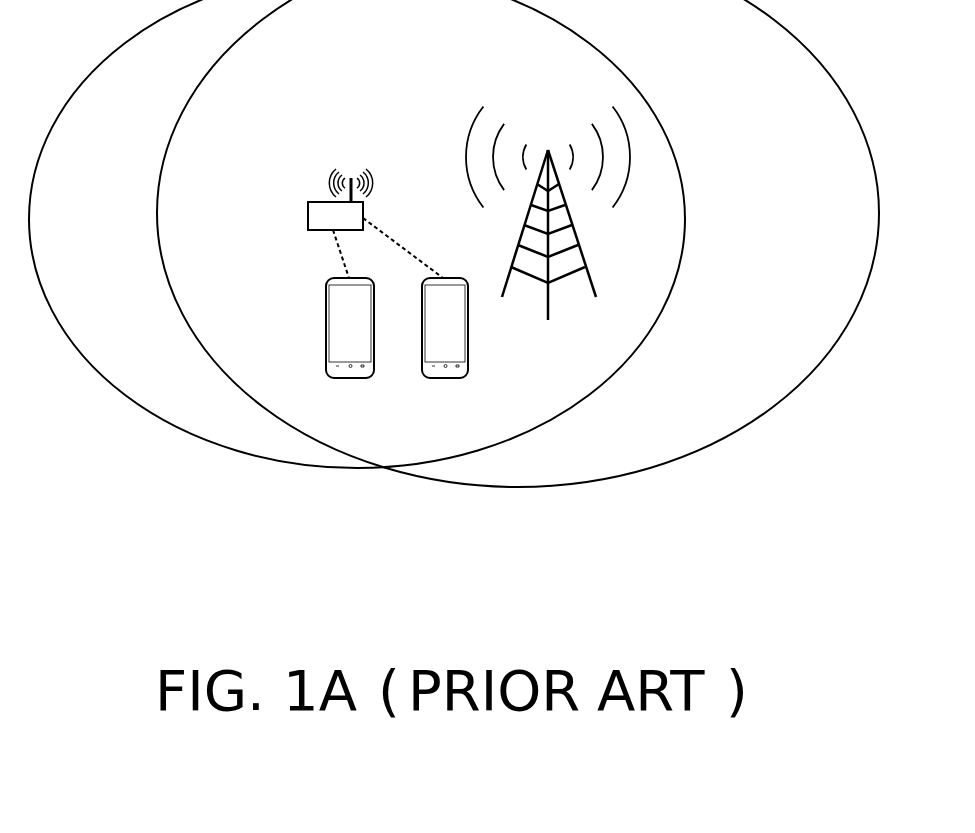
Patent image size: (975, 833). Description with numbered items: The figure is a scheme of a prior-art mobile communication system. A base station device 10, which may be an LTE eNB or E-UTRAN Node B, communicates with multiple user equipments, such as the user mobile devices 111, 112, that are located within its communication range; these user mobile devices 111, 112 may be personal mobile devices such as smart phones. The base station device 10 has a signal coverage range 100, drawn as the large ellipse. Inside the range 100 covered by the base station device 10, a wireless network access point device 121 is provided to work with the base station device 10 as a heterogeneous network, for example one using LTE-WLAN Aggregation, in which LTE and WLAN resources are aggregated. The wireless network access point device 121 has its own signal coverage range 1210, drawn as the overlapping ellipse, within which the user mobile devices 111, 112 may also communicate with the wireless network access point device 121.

The base station device 10 is at (563, 253).
The signal coverage range 100 is at (510, 487).
The user mobile device 111 is at (351, 378).
The user mobile device 112 is at (459, 341).
The wireless network access point device 121 is at (308, 214).
The signal coverage range 1210 is at (201, 441).